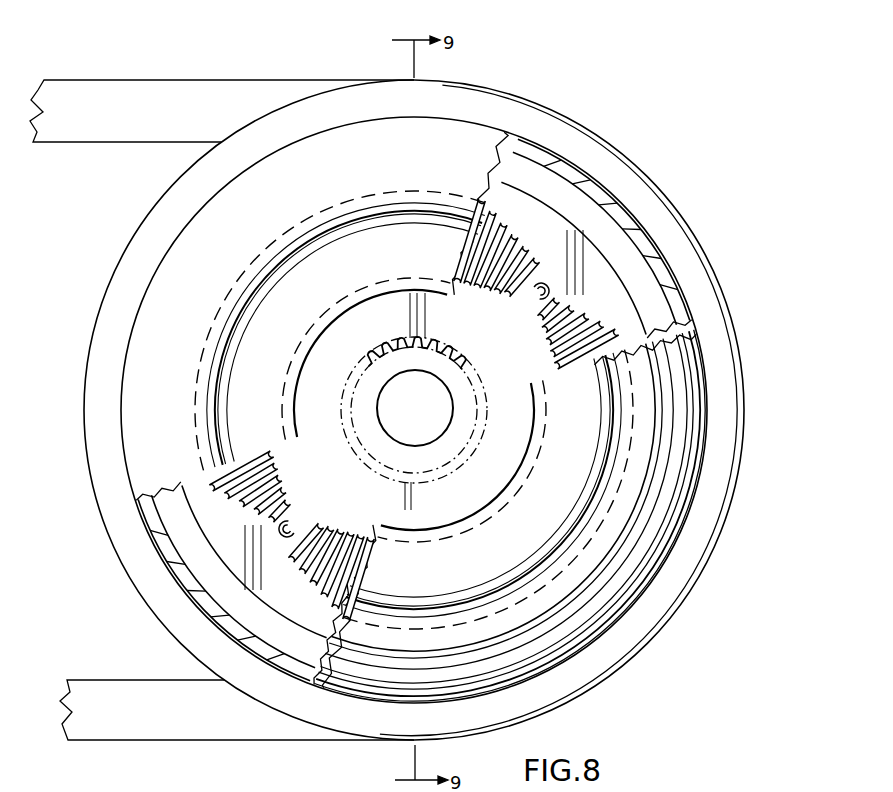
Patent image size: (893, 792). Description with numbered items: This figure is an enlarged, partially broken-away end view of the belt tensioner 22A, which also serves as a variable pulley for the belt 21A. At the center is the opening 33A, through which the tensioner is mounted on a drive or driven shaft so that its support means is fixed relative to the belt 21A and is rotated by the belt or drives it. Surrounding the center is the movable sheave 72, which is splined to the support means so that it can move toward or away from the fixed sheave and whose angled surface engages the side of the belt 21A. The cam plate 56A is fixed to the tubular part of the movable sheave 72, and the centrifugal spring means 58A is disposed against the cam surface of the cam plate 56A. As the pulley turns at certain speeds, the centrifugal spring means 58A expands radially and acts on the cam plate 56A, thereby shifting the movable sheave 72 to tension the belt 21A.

The belt 21A is at (143, 80).
The belt tensioner 22A is at (706, 108).
The opening 33A is at (418, 447).
The cam plate 56A is at (682, 432).
The centrifugal spring means 58A is at (614, 331).
The movable sheave 72 is at (712, 523).